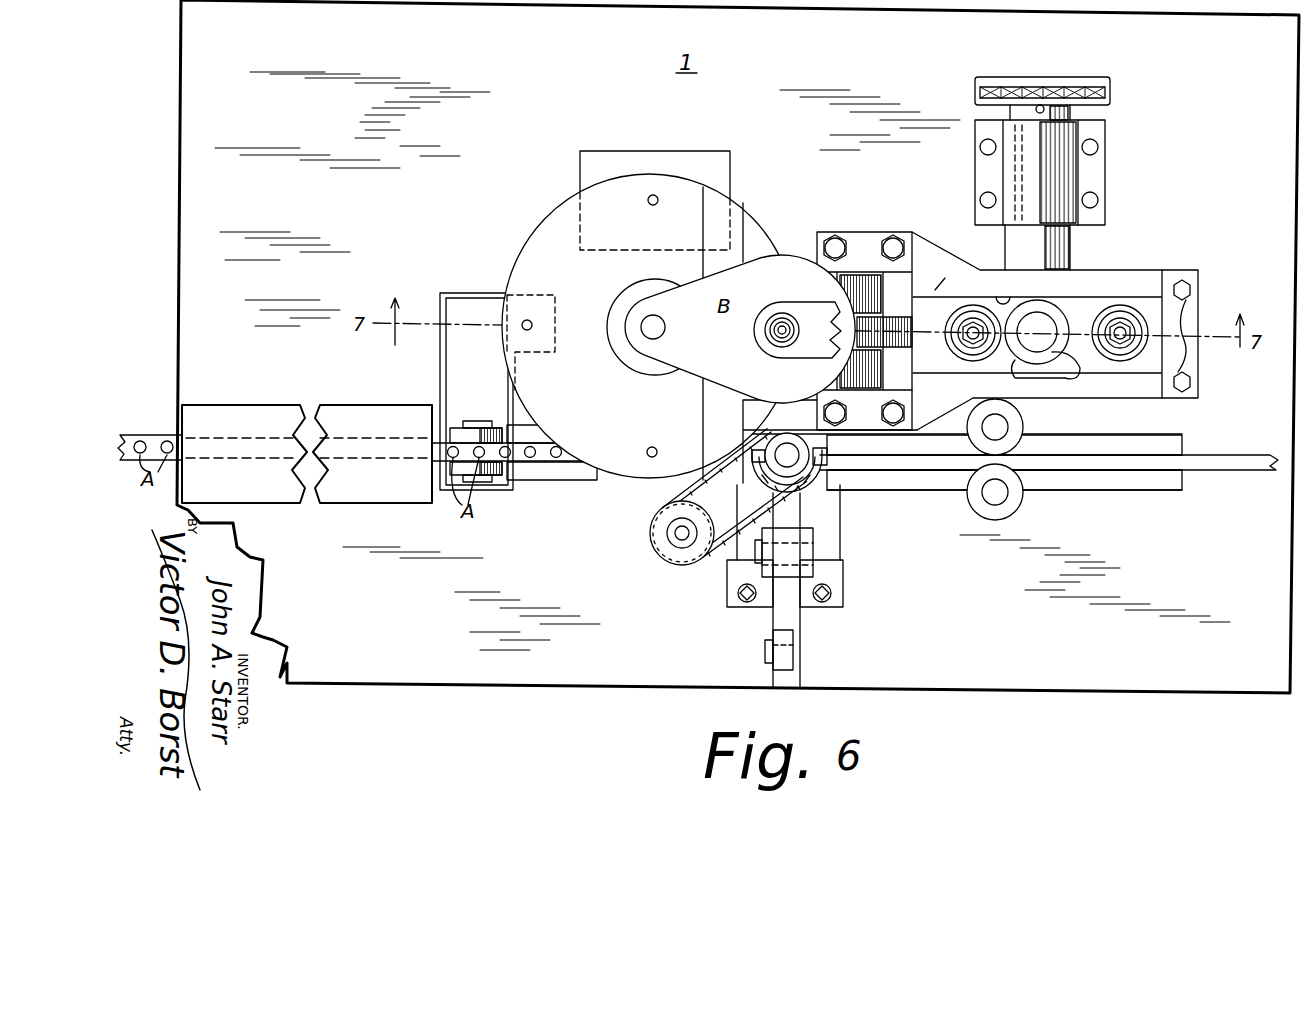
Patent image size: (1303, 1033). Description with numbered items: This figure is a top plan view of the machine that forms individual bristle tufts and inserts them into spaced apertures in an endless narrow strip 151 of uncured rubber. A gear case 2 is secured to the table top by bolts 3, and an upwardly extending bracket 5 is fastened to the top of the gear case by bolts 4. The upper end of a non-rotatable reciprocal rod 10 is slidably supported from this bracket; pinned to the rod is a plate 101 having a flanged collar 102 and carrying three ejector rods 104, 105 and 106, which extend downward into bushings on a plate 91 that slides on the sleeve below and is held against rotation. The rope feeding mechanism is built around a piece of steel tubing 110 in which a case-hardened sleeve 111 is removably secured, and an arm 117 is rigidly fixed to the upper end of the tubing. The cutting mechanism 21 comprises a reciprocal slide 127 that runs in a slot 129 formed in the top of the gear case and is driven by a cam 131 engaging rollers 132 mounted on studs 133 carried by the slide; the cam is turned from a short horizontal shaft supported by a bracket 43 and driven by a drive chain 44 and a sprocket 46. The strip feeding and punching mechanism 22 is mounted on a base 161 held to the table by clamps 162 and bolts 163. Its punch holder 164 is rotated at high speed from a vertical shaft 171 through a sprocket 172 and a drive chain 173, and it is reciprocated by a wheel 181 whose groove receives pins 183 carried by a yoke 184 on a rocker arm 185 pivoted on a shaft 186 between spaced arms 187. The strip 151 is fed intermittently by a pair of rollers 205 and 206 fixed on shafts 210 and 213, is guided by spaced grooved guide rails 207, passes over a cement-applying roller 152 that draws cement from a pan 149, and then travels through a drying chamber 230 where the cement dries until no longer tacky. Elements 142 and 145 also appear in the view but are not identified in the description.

The gear case 2 is at (1055, 331).
The bolts 3 is at (1181, 336).
The bolts 4 is at (876, 317).
The bracket 5 is at (905, 297).
The non-rotatable reciprocal rod 10 is at (659, 325).
The cutting mechanism 21 is at (935, 293).
The strip feeding and punching mechanism 22 is at (838, 553).
The bracket 43 is at (1078, 176).
The drive chain 44 is at (1063, 80).
The sprocket 46 is at (1020, 110).
The plate 91 is at (745, 203).
The plate 101 is at (649, 326).
The flanged collar 102 is at (650, 372).
The ejector rod 104 is at (653, 205).
The ejector rod 105 is at (533, 324).
The ejector rod 106 is at (658, 441).
The steel tubing 110 is at (785, 313).
The sleeve 111 is at (770, 345).
The arm 117 is at (800, 358).
The reciprocal slide 127 is at (1035, 341).
The slot 129 is at (1003, 297).
The cam 131 is at (1062, 364).
The rollers 132 is at (958, 350).
The studs 133 is at (980, 342).
The lever 142 is at (766, 250).
The bracket 145 is at (648, 151).
The pan 149 is at (478, 285).
The strip 151 is at (153, 438).
The roller 152 is at (478, 428).
The base 161 is at (832, 530).
The clamps 162 is at (836, 608).
The bolts 163 is at (737, 607).
The punch holder 164 is at (787, 450).
The vertical shaft 171 is at (675, 535).
The sprocket 172 is at (668, 560).
The drive chain 173 is at (670, 503).
The wheel 181 is at (810, 446).
The pins 183 is at (826, 465).
The yoke 184 is at (815, 488).
The rocker arm 185 is at (800, 636).
The shaft 186 is at (758, 565).
The spaced arms 187 is at (845, 580).
The roller 205 is at (1012, 419).
The roller 206 is at (948, 468).
The guide rails 207 is at (540, 435).
The shaft 210 is at (1002, 431).
The shaft 213 is at (1005, 498).
The drying chamber 230 is at (387, 503).